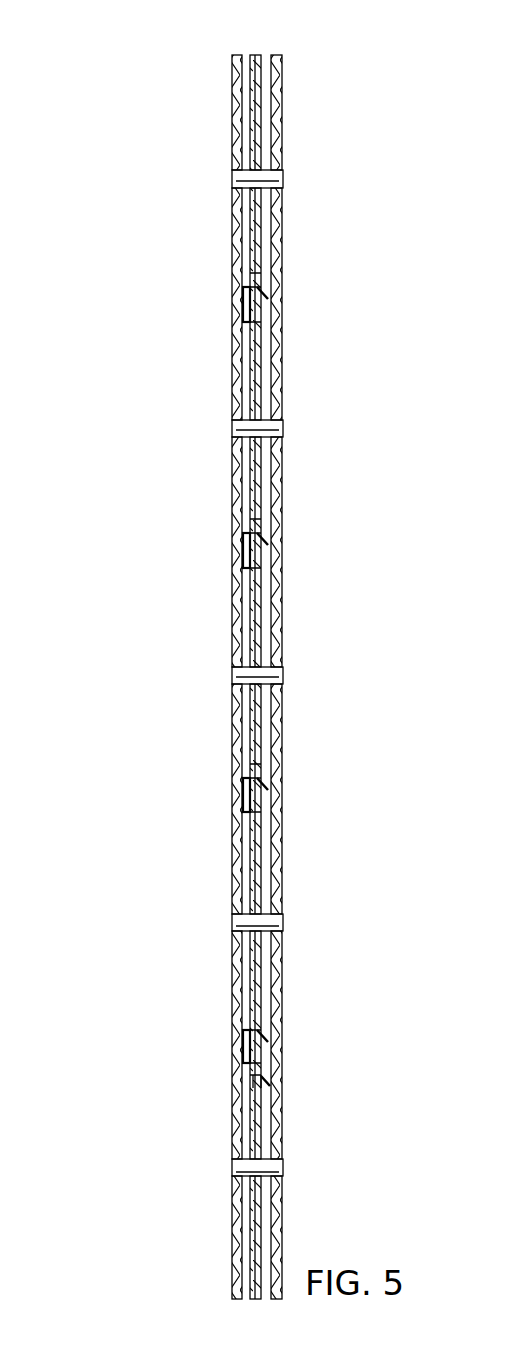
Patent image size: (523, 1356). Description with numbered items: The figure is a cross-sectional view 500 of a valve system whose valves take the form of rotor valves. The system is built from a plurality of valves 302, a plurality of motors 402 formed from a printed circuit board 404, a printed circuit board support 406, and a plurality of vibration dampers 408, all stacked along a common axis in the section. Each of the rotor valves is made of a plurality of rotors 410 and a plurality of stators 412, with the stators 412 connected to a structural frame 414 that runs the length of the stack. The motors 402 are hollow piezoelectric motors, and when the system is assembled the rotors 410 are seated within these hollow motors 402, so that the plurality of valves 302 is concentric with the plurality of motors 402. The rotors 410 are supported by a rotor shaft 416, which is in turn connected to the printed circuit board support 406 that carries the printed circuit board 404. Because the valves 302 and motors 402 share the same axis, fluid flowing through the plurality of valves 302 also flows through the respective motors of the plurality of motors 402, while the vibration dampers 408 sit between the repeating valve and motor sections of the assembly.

The view 500 is at (70, 58).
The plurality of valves 302 is at (193, 86).
The plurality of motors 402 is at (258, 285).
The printed circuit board 404 is at (258, 550).
The printed circuit board support 406 is at (278, 862).
The plurality of vibration dampers 408 is at (265, 82).
The plurality of rotors 410 is at (245, 890).
The plurality of stators 412 is at (240, 1126).
The structural frame 414 is at (240, 1037).
The rotor shaft 416 is at (278, 179).